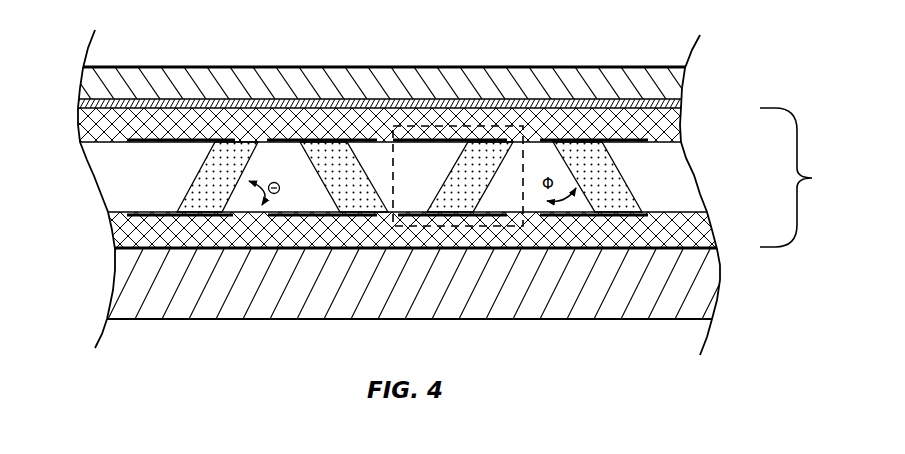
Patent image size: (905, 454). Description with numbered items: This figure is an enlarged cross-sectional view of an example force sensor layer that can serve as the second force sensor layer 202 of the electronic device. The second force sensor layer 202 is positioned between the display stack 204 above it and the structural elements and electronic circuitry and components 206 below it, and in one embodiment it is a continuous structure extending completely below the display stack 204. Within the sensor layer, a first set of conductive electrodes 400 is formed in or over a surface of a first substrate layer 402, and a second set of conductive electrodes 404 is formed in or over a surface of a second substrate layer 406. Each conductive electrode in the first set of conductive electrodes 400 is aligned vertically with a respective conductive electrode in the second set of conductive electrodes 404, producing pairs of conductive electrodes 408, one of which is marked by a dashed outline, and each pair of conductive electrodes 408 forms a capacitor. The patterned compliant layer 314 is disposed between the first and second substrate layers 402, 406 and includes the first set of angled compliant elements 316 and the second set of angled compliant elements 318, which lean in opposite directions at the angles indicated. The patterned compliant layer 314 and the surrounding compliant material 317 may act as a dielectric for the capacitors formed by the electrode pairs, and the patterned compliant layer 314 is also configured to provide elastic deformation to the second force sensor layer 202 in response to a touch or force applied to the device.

The second force sensor layer 202 is at (805, 177).
The display stack 204 is at (400, 87).
The structural elements and electronic circuitry and components 206 is at (400, 284).
The patterned compliant layer 314 is at (702, 174).
The first set of angled compliant elements 316 is at (199, 171).
The surrounding compliant material 317 is at (150, 155).
The second set of angled compliant elements 318 is at (621, 176).
The first set of conductive electrodes 400 is at (718, 214).
The first substrate layer 402 is at (400, 230).
The second set of conductive electrodes 404 is at (690, 139).
The second substrate layer 406 is at (400, 125).
The pair of conductive electrodes 408 is at (422, 125).